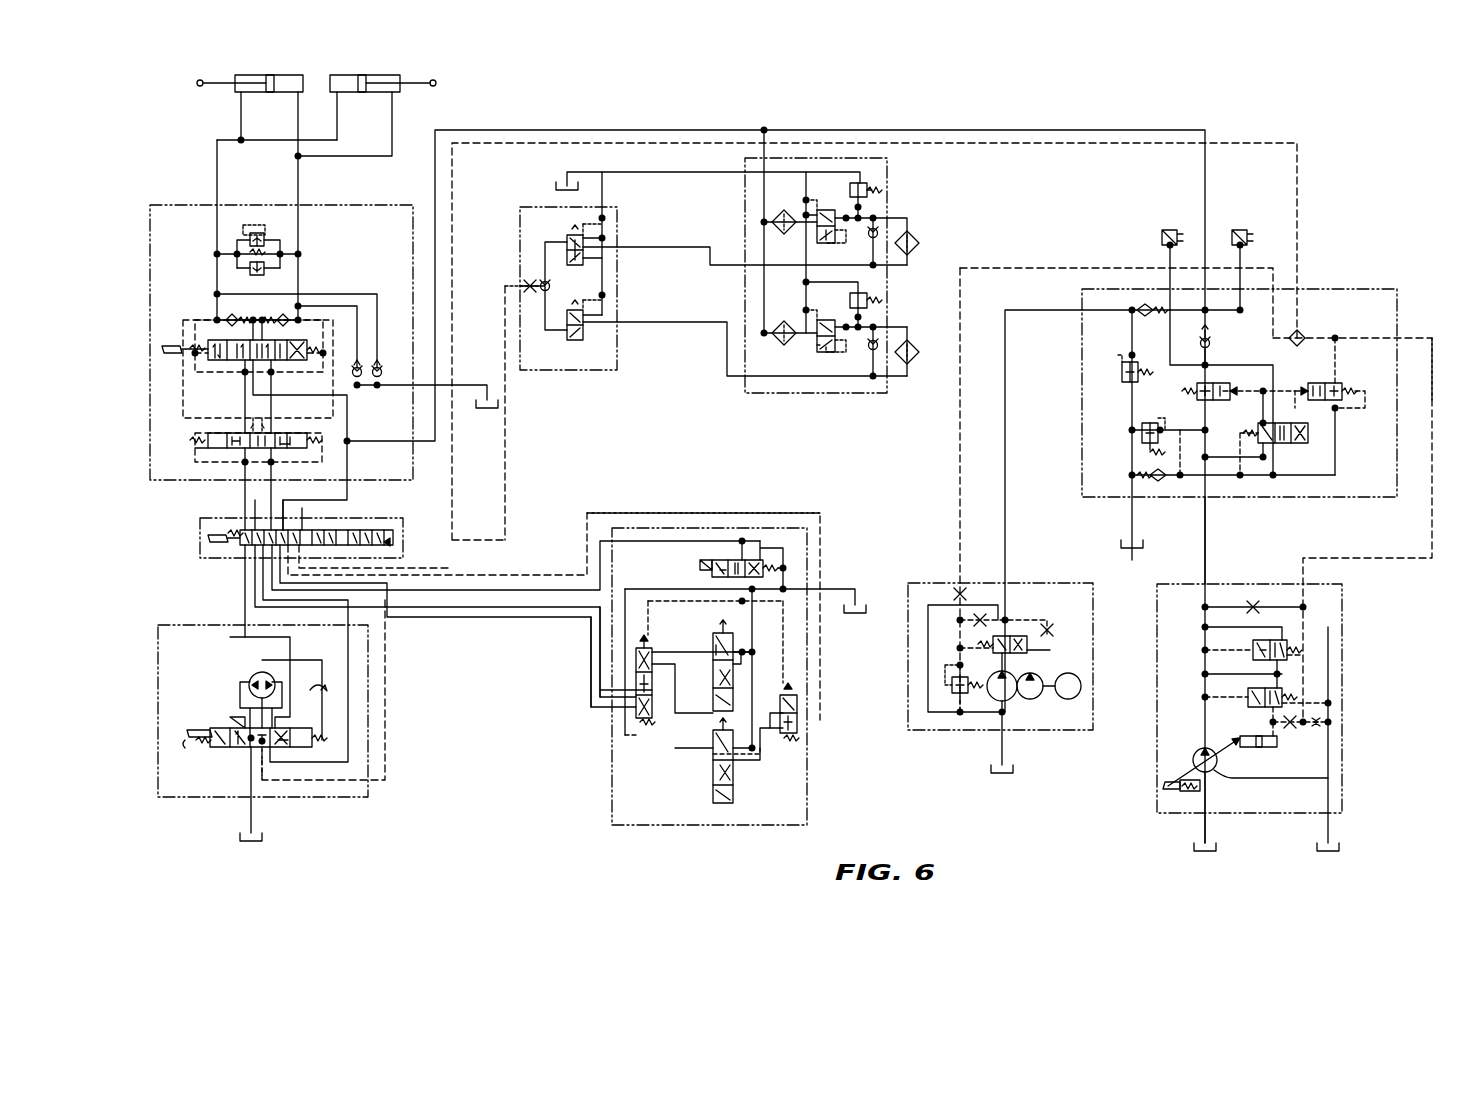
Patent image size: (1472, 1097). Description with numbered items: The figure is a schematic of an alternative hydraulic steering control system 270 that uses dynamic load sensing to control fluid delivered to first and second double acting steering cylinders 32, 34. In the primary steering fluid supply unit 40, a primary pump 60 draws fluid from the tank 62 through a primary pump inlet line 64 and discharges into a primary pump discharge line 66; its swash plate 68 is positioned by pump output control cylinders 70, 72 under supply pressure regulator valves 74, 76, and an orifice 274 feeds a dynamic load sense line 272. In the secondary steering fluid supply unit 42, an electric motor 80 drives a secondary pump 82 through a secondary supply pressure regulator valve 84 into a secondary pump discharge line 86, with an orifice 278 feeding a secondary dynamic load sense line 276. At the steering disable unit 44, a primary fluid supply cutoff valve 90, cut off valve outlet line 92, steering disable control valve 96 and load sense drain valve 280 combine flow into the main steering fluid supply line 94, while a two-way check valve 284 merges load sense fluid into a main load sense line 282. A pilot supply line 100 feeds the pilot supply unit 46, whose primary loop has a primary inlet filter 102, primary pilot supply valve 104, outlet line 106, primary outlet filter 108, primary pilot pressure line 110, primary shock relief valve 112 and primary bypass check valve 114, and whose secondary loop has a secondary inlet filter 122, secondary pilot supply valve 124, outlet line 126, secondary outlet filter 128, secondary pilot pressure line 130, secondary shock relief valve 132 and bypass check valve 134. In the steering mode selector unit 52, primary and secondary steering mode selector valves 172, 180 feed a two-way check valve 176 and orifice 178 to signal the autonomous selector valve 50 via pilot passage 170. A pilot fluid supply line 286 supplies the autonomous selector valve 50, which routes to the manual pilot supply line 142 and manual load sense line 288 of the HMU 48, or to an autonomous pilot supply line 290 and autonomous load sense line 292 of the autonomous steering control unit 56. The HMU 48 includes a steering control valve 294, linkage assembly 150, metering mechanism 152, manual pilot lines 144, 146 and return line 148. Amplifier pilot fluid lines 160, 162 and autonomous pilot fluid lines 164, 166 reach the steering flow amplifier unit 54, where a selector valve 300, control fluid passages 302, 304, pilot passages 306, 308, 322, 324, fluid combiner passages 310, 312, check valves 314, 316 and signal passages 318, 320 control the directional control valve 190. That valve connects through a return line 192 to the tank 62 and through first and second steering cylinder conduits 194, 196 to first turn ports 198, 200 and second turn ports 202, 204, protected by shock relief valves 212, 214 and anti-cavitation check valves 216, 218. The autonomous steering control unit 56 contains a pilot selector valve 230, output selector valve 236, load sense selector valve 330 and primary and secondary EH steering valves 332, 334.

The first double acting steering cylinder 32 is at (245, 76).
The second double acting steering cylinder 34 is at (343, 76).
The first turn port 198 is at (240, 94).
The second turn port 202 is at (297, 93).
The first turn port 200 is at (337, 93).
The second turn port 204 is at (395, 94).
The steering flow amplifier unit 54 is at (150, 410).
The first steering cylinder conduit 194 is at (217, 236).
The second steering cylinder conduit 196 is at (298, 238).
The shock relief valve 212 is at (264, 237).
The shock relief valve 214 is at (250, 268).
The fluid combiner passage 310 is at (217, 294).
The fluid combiner passage 312 is at (322, 306).
The check valve 314 is at (226, 318).
The check valve 316 is at (262, 320).
The signal passage 320 is at (277, 320).
The anti-cavitation check valve 218 is at (377, 358).
The anti-cavitation check valve 216 is at (358, 362).
The return line 192 is at (487, 390).
The tank 62 is at (492, 410).
The directional control valve 190 is at (208, 332).
The signal passage 318 is at (183, 372).
The pilot passage 306 is at (245, 384).
The pilot passage 308 is at (290, 376).
The control fluid passage 304 is at (271, 398).
The selector valve 300 is at (200, 440).
The control fluid passage 302 is at (235, 422).
The pilot passage 322 is at (200, 452).
The pilot fluid supply line 286 is at (347, 460).
The pilot passage 324 is at (347, 490).
The first amplifier pilot fluid line 160 is at (245, 494).
The second amplifier pilot fluid line 162 is at (271, 506).
The autonomous selector valve 50 is at (390, 532).
The autonomous load sense line 292 is at (440, 575).
The second autonomous pilot fluid line 166 is at (600, 672).
The first autonomous pilot fluid line 164 is at (591, 708).
The manual steering control unit (HMU) 48 is at (186, 800).
The manual load sense line 288 is at (385, 736).
The second manual pilot line 146 is at (290, 650).
The linkage assembly 150 is at (322, 680).
The metering mechanism 152 is at (258, 672).
The first manual pilot line 144 is at (232, 690).
The manual pilot supply line 142 is at (330, 762).
The steering control valve 294 is at (215, 728).
The return line 148 is at (251, 817).
The main steering fluid supply line 94 is at (1050, 130).
The main load sense line 282 is at (1297, 196).
The autonomous selector valve pilot passage 170 is at (505, 412).
The hydraulic steering control system 270 is at (1242, 118).
The steering mode selector unit 52 is at (523, 206).
The pilot supply line 100 is at (765, 132).
The secondary steering mode selector valve 180 is at (567, 244).
The primary steering mode selector valve 172 is at (567, 328).
The two-way check valve 176 is at (542, 283).
The orifice 178 is at (526, 290).
The secondary pilot pressure line 130 is at (668, 248).
The primary pilot pressure line 110 is at (670, 323).
The pilot supply unit 46 is at (887, 170).
The secondary shock relief valve 132 is at (862, 182).
The secondary inlet filter 122 is at (782, 210).
The secondary pilot supply valve 124 is at (836, 210).
The bypass check valve 134 is at (878, 232).
The secondary pilot supply valve outlet line 126 is at (907, 218).
The secondary outlet filter 128 is at (919, 243).
The primary shock relief valve 112 is at (867, 286).
The primary inlet filter 102 is at (782, 345).
The primary pilot supply valve outlet line 106 is at (895, 327).
The primary outlet filter 108 is at (919, 360).
The primary bypass check valve 114 is at (876, 355).
The primary pilot supply valve 104 is at (817, 345).
The steering disable unit 44 is at (1370, 289).
The secondary pump discharge line 86 is at (1005, 510).
The two-way check valve 284 is at (1300, 330).
The dynamic load sense line 272 is at (1432, 380).
The cut off valve outlet line 92 is at (1197, 388).
The load sense drain valve 280 is at (1330, 383).
The steering disable control valve 96 is at (1275, 445).
The primary fluid supply cutoff valve 90 is at (1226, 435).
The primary pump discharge line 66 is at (1205, 548).
The secondary steering fluid supply unit 42 is at (950, 732).
The secondary dynamic load sense line 276 is at (960, 502).
The orifice 278 is at (980, 614).
The secondary supply pressure regulator valve 84 is at (1050, 650).
The secondary pump 82 is at (1010, 700).
The electric motor 80 is at (1081, 682).
The primary steering fluid supply unit 40 is at (1342, 778).
The orifice 274 is at (1253, 606).
The supply pressure regulator valve 74 is at (1290, 640).
The supply pressure regulator valve 76 is at (1285, 690).
The second pump output control cylinder 72 is at (1277, 741).
The primary pump 60 is at (1197, 750).
The stroke-adjusting mechanism 68 is at (1190, 768).
The first pump output control cylinder 70 is at (1190, 792).
The primary pump inlet line 64 is at (1208, 832).
The autonomous steering control unit 56 is at (733, 827).
The autonomous pilot supply line 290 is at (658, 528).
The pilot selector valve 230 is at (712, 563).
The output selector valve 236 is at (652, 728).
The secondary EH steering valve 334 is at (713, 648).
The primary EH steering valve 332 is at (713, 770).
The load sense selector valve 330 is at (790, 735).